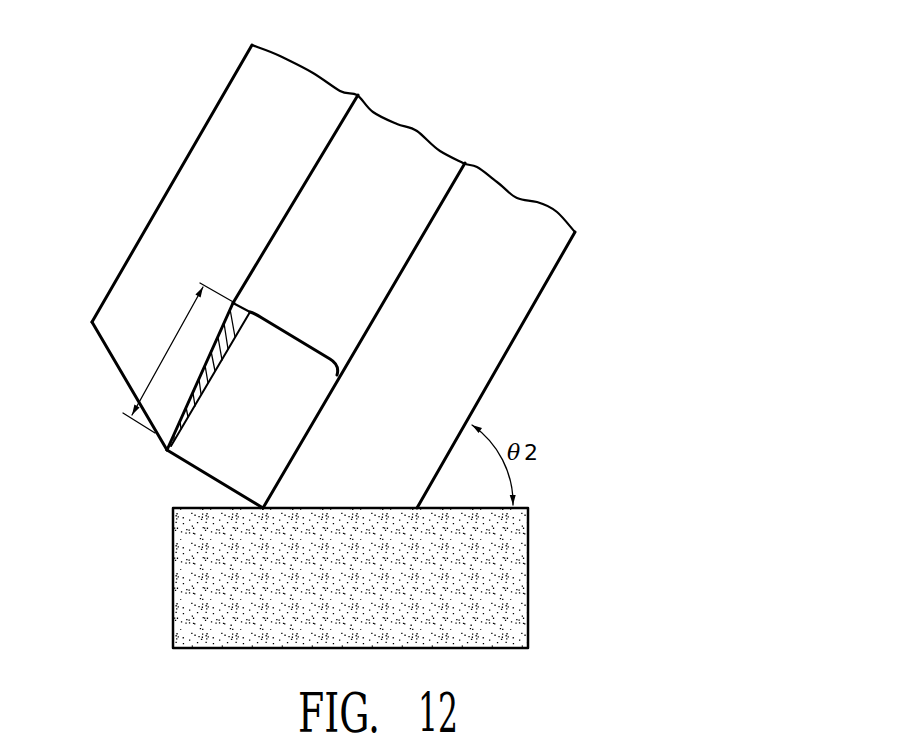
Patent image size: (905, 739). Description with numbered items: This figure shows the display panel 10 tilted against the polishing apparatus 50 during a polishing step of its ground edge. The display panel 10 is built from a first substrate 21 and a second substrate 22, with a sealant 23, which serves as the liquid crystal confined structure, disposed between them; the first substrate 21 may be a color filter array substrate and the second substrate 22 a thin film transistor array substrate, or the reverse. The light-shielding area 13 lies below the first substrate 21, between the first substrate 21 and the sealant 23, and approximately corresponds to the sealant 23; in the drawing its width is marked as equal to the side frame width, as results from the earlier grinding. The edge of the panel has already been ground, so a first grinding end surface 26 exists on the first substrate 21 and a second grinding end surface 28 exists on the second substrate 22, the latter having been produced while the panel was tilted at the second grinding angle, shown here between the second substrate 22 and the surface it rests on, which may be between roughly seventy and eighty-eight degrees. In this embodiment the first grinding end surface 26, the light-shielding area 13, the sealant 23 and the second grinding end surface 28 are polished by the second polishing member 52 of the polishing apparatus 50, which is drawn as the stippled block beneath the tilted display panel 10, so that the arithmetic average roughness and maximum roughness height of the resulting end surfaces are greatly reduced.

The display panel 10 is at (548, 116).
The first substrate 21 is at (205, 153).
The second substrate 22 is at (540, 276).
The sealant 23 is at (288, 363).
The light-shielding area 13 is at (208, 362).
The first grinding end surface 26 is at (132, 388).
The second grinding end surface 28 is at (332, 507).
The polishing apparatus 50 is at (549, 650).
The second polishing member 52 is at (517, 585).